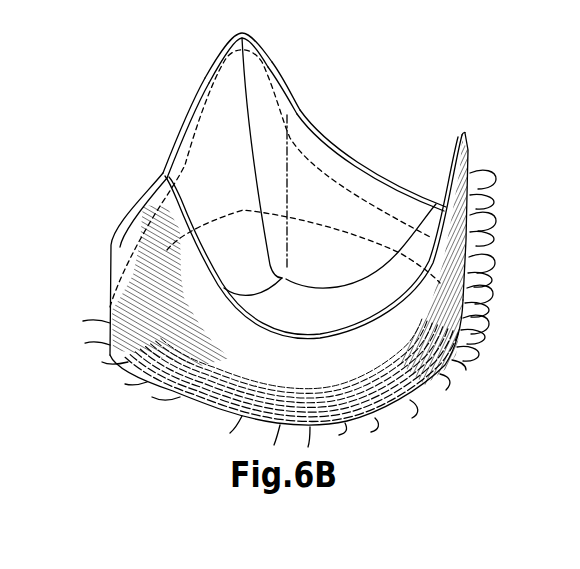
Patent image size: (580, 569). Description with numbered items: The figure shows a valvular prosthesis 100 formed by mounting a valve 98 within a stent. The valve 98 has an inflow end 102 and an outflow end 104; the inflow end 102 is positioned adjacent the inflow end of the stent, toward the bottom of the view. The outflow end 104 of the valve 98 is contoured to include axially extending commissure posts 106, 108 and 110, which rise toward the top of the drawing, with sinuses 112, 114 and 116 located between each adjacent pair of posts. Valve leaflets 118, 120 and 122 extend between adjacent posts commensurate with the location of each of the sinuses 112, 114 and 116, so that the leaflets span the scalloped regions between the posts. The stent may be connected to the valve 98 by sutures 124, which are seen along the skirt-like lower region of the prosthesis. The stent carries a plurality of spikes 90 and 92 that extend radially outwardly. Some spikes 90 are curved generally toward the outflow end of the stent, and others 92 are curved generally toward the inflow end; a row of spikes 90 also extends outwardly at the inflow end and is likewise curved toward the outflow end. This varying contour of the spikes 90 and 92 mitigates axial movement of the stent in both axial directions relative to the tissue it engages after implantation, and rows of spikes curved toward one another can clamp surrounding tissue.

The spikes 90 is at (487, 213).
The spikes 92 is at (486, 173).
The valve 98 is at (345, 176).
The valvular prosthesis 100 is at (497, 147).
The inflow end 102 is at (377, 418).
The outflow end 104 is at (292, 92).
The commissure post 106 is at (178, 165).
The commissure post 108 is at (241, 33).
The commissure post 110 is at (465, 131).
The sinus 112 is at (118, 246).
The sinus 114 is at (393, 187).
The sinus 116 is at (312, 334).
The valve leaflet 118 is at (240, 199).
The valve leaflet 120 is at (346, 254).
The valve leaflet 122 is at (313, 321).
The sutures 124 is at (165, 385).